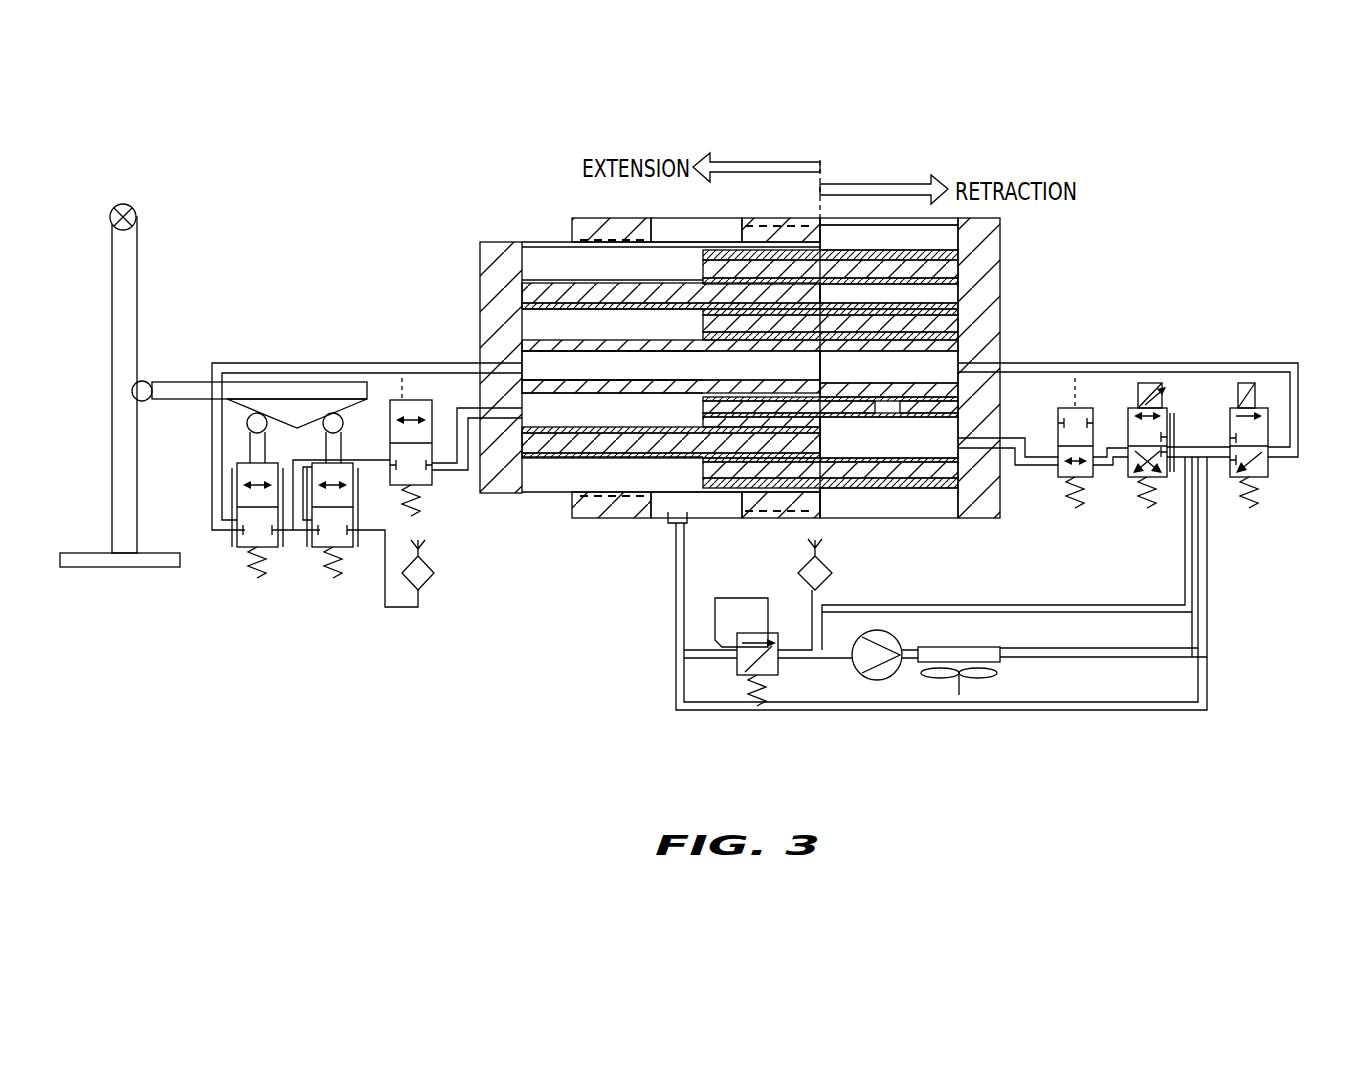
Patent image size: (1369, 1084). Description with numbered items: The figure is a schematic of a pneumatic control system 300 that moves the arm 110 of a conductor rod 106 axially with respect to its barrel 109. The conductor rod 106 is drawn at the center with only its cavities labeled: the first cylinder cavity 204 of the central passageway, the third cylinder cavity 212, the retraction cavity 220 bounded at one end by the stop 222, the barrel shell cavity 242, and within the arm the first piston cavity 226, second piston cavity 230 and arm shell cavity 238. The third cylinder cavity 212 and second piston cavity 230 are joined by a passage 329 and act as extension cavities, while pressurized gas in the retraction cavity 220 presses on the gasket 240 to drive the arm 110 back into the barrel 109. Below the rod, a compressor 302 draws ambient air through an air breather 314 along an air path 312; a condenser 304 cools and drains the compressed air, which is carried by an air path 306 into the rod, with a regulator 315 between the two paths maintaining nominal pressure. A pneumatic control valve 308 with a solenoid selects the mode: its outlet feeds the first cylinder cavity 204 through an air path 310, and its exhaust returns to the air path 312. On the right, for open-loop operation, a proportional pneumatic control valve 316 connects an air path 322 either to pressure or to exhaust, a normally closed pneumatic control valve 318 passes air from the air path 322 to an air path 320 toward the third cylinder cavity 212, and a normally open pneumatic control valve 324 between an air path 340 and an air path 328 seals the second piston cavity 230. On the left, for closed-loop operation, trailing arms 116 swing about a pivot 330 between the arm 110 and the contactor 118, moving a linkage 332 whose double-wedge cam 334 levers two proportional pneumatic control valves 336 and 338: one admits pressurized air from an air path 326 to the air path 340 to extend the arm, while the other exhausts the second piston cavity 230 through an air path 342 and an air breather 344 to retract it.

The conductor rod 106 is at (541, 223).
The barrel 109 is at (1036, 279).
The arm 110 is at (543, 520).
The trailing arms 116 is at (137, 262).
The contactor 118 is at (117, 568).
The first cylinder cavity 204 is at (904, 372).
The third cylinder cavity 212 is at (904, 312).
The retraction cavity 220 is at (718, 218).
The stop 222 is at (624, 218).
The first piston cavity 226 is at (625, 382).
The second piston cavity 230 is at (625, 343).
The arm shell cavity 238 is at (625, 278).
The gasket 240 is at (804, 218).
The barrel shell cavity 242 is at (904, 255).
The pneumatic control system 300 is at (655, 762).
The compressor 302 is at (890, 637).
The condenser 304 is at (982, 650).
The air path 306 is at (1183, 709).
The pneumatic control valve 308 is at (1260, 472).
The air path 310 is at (1296, 364).
The air path 312 is at (1088, 608).
The air breather 314 is at (800, 572).
The regulator 315 is at (768, 670).
The pneumatic control valve 316 is at (1162, 410).
The pneumatic control valve 318 is at (1092, 410).
The air path 320 is at (1040, 462).
The air path 322 is at (1113, 462).
The pneumatic control valve 324 is at (425, 478).
The air path 326 is at (388, 368).
The air path 328 is at (463, 470).
The passage 329 is at (893, 420).
The pivot 330 is at (135, 207).
The linkage 332 is at (165, 387).
The double-wedge cam 334 is at (297, 410).
The pneumatic control valve 336 is at (243, 543).
The pneumatic control valve 338 is at (322, 545).
The air path 340 is at (298, 528).
The air path 342 is at (388, 607).
The air breather 344 is at (420, 582).